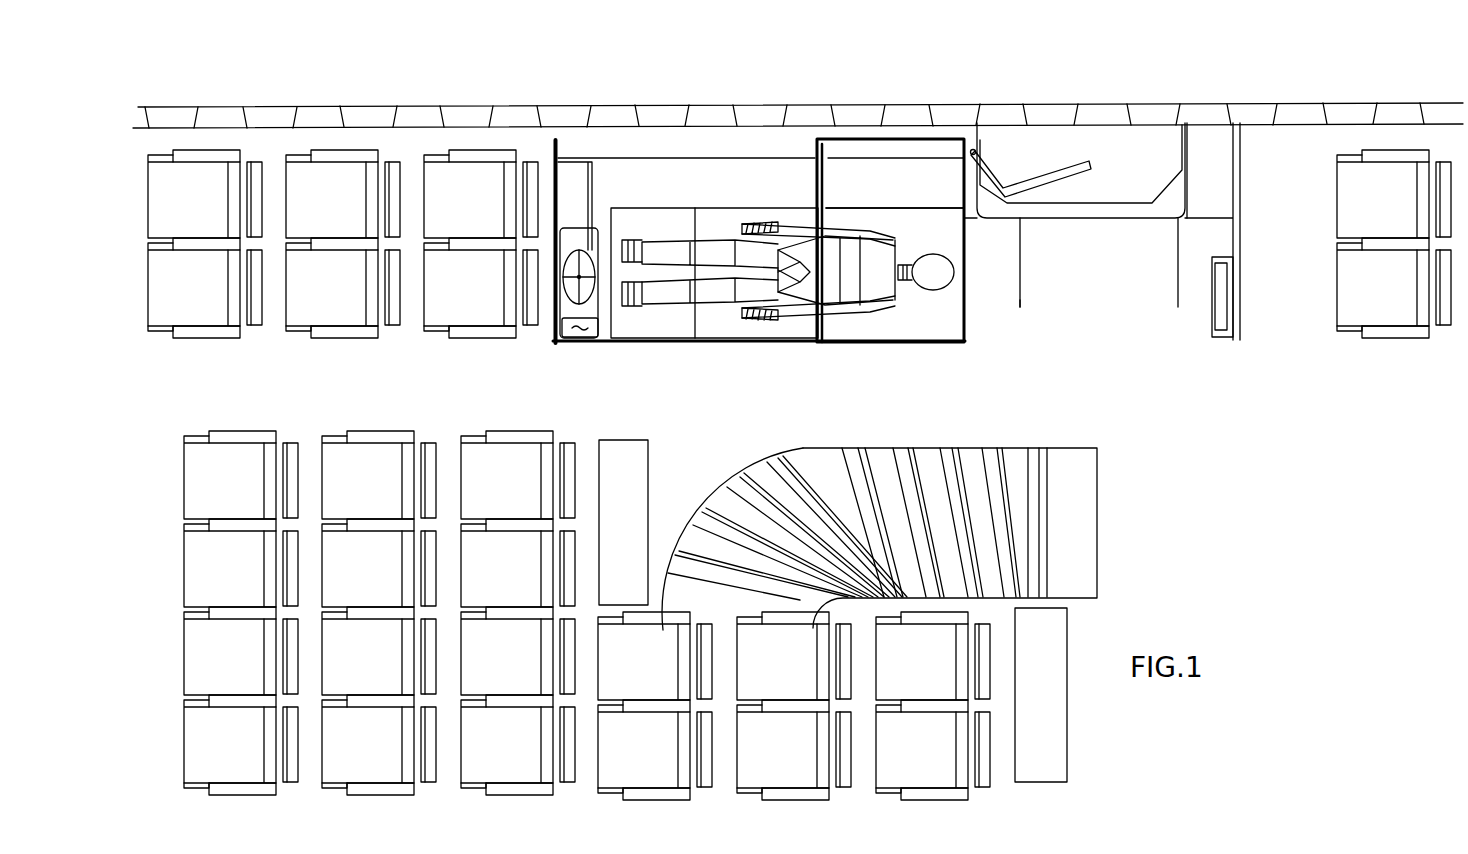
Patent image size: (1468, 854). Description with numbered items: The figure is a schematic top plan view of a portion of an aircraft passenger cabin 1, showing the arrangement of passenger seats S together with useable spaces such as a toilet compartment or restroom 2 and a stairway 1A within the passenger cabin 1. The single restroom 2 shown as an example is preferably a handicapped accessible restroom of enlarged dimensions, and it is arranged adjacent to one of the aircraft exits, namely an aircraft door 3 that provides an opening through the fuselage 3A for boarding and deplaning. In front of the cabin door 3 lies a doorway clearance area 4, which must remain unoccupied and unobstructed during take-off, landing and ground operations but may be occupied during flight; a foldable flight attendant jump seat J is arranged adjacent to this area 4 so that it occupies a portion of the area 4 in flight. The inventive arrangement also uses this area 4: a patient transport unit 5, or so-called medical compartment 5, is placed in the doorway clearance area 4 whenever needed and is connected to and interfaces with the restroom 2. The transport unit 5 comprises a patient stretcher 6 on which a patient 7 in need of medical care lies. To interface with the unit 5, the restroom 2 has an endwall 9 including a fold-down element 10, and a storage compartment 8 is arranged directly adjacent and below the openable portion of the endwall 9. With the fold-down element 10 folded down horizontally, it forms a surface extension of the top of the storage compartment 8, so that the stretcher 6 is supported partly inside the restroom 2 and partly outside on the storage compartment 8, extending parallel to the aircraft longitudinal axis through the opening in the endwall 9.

The passenger cabin 1 is at (468, 83).
The stairway 1A is at (1097, 531).
The toilet compartment or restroom 2 is at (702, 185).
The aircraft door 3 is at (1070, 165).
The fuselage 3A is at (1207, 117).
The doorway clearance area 4 is at (1112, 287).
The patient transport unit 5 is at (1020, 326).
The patient stretcher 6 is at (933, 313).
The patient 7 is at (845, 270).
The storage cabinet or compartment 8 is at (896, 185).
The endwall 9 is at (824, 336).
The fold-down element 10 is at (722, 317).
The passenger seat S is at (492, 316).
The flight attendant jump seat J is at (1213, 342).